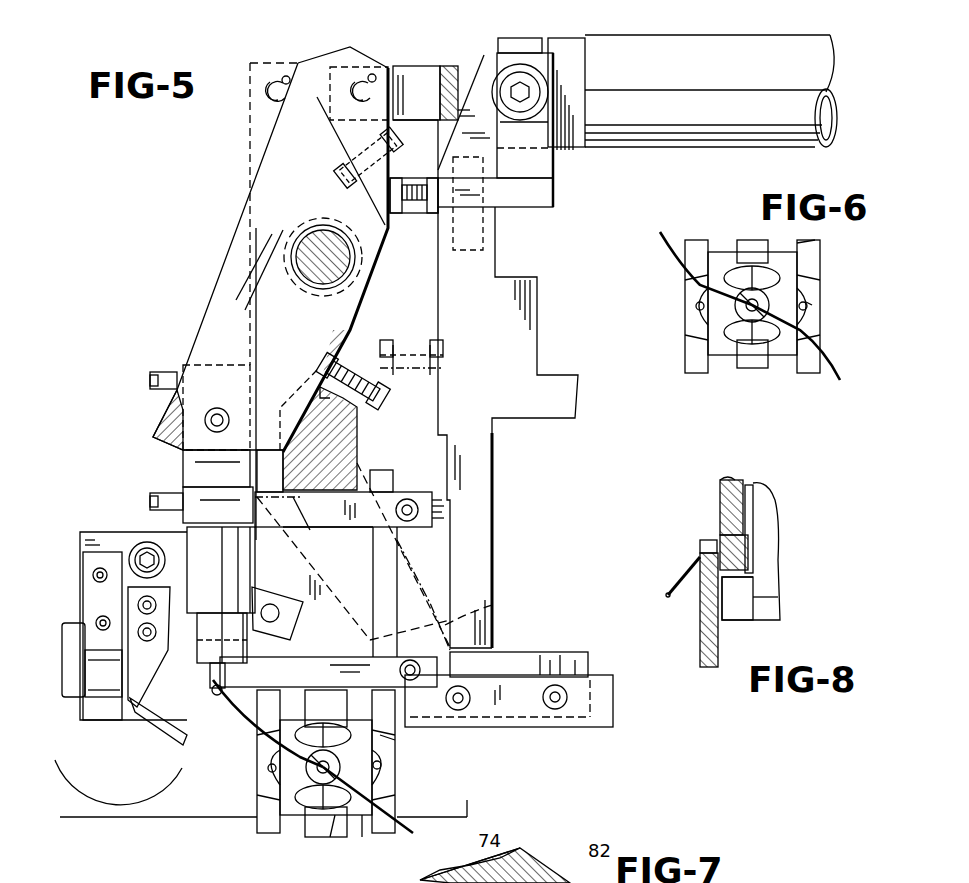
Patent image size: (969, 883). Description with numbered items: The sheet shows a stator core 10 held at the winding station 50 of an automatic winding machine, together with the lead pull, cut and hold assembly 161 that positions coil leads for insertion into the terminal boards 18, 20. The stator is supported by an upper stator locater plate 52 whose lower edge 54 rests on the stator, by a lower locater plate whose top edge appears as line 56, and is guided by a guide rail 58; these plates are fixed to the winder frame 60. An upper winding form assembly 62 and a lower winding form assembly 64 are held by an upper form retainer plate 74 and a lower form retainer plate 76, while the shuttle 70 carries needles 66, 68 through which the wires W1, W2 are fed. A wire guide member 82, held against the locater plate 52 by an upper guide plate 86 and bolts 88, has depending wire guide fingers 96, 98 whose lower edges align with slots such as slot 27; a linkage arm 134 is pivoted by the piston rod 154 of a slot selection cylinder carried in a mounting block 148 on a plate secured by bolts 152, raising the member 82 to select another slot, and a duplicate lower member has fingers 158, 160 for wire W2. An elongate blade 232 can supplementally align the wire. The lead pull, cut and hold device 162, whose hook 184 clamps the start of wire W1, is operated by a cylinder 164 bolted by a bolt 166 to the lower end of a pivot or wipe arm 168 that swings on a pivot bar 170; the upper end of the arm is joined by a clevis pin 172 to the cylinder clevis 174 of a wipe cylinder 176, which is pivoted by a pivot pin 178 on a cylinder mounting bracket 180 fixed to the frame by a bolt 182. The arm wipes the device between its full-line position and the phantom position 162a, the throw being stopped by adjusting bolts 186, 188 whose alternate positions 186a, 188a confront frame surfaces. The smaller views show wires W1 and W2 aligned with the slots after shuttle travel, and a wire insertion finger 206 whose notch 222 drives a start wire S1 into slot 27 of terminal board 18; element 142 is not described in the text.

In FIG. 5, the stator core 10 is at (360, 824).
In FIG. 6, the stator core 10 is at (722, 254).
In FIG. 8, the stator core 10 is at (720, 502).
In FIG. 6, the terminal board 18 is at (683, 307).
In FIG. 8, the terminal board 18 is at (773, 554).
In FIG. 6, the terminal board 20 is at (812, 307).
In FIG. 8, the transverse slot 27 is at (745, 600).
In FIG. 5, the winding station 50 is at (403, 765).
In FIG. 5, the upper stator locater plate 52 is at (110, 534).
In FIG. 5, the lower edge 54 is at (108, 724).
In FIG. 5, the top edge of lower stator locater plate 56 is at (467, 802).
In FIG. 5, the guide rail 58 is at (612, 696).
In FIG. 5, the winder frame 60 is at (530, 352).
In FIG. 5, the upper winding form assembly 62 is at (316, 692).
In FIG. 5, the lower winding form assembly 64 is at (337, 820).
In FIG. 5, the needle 66 is at (265, 768).
In FIG. 6, the needle 66 is at (692, 328).
In FIG. 5, the needle 68 is at (388, 777).
In FIG. 6, the needle 68 is at (810, 287).
In FIG. 5, the winding ram or shuttle 70 is at (270, 772).
In FIG. 6, the winding ram or shuttle 70 is at (760, 277).
In FIG. 5, the upper form retainer plate 74 is at (350, 437).
In FIG. 6, the upper form retainer plate 74 is at (750, 242).
In FIG. 5, the lower form retainer plate 76 is at (306, 838).
In FIG. 6, the lower form retainer plate 76 is at (752, 364).
In FIG. 5, the wire guide member 82 is at (340, 628).
In FIG. 5, the upper guide plate 86 is at (425, 498).
In FIG. 5, the bolt 88 is at (408, 499).
In FIG. 5, the wire guide finger 96 is at (262, 742).
In FIG. 6, the wire guide finger 96 is at (693, 242).
In FIG. 5, the wire guide finger 98 is at (394, 738).
In FIG. 6, the wire guide finger 98 is at (812, 247).
In FIG. 5, the linkage arm 134 is at (262, 592).
In FIG. 5, the lever 142 is at (183, 740).
In FIG. 5, the mounting block 148 is at (62, 642).
In FIG. 5, the bolt 152 is at (96, 622).
In FIG. 5, the piston rod 154 is at (85, 666).
In FIG. 5, the wire guide finger 158 is at (262, 830).
In FIG. 6, the wire guide finger 158 is at (695, 375).
In FIG. 5, the wire guide finger 160 is at (392, 837).
In FIG. 6, the wire guide finger 160 is at (805, 370).
In FIG. 5, the lead pull, cut and hold assembly 161 is at (245, 152).
In FIG. 5, the lead pull, cut and hold device 162 is at (195, 664).
In FIG. 5, the phantom line position of device 162 162a is at (450, 627).
In FIG. 5, the lead pull, cut and hold cylinder 164 is at (183, 470).
In FIG. 5, the bolt 166 is at (205, 422).
In FIG. 5, the pivot or wipe arm 168 is at (220, 302).
In FIG. 5, the pivot bar 170 is at (303, 252).
In FIG. 5, the clevis pin 172 is at (355, 85).
In FIG. 5, the cylinder clevis 174 is at (420, 72).
In FIG. 5, the wipe cylinder 176 is at (636, 47).
In FIG. 5, the pivot pin 178 is at (518, 72).
In FIG. 5, the cylinder mounting bracket 180 is at (548, 164).
In FIG. 5, the bolt 182 is at (482, 236).
In FIG. 5, the hook 184 is at (212, 682).
In FIG. 5, the adjusting bolt or spacer 186 is at (415, 213).
In FIG. 5, the phantom line position of adjusting bolt 186 186a is at (345, 168).
In FIG. 5, the adjusting bolt or spacer 188 is at (378, 398).
In FIG. 5, the phantom line position of adjusting bolt 188 188a is at (412, 346).
In FIG. 8, the wire insertion finger 206 is at (715, 647).
In FIG. 8, the notch 222 is at (700, 547).
In FIG. 5, the blade 232 is at (370, 560).
In FIG. 5, the wire W1 is at (236, 708).
In FIG. 6, the wire W1 is at (665, 247).
In FIG. 8, the wire W1 is at (755, 517).
In FIG. 5, the wire W2 is at (400, 808).
In FIG. 8, the stator coil start wire S1 is at (672, 580).